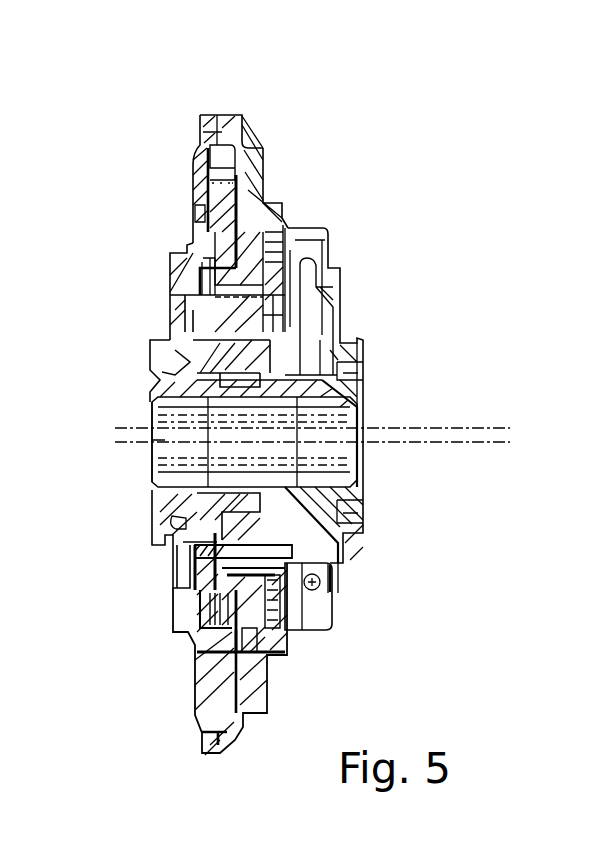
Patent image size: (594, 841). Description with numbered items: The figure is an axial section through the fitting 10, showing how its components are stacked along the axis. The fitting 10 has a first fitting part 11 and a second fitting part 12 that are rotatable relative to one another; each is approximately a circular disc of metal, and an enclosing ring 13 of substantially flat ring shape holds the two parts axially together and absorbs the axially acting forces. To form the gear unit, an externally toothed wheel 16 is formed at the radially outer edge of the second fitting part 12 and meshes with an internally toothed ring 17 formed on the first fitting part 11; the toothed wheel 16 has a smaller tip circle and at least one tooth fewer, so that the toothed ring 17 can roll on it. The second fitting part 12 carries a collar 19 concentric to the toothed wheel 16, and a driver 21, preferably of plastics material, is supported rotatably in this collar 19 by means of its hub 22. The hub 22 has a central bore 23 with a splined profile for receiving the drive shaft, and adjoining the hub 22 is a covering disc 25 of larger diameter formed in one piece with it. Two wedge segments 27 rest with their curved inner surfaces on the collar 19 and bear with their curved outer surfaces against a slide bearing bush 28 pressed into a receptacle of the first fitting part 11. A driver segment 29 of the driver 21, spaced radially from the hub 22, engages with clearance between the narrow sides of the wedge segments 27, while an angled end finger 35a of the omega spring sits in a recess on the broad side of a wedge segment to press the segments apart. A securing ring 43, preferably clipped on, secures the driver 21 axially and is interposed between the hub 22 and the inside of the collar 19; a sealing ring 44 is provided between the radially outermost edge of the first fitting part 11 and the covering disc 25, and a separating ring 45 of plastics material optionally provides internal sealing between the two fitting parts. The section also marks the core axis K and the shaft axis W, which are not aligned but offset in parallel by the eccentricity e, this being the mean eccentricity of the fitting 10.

The fitting 10 is at (380, 155).
The first fitting part 11 is at (290, 216).
The second fitting part 12 is at (203, 223).
The enclosing ring 13 is at (203, 146).
The externally toothed wheel 16 is at (235, 175).
The internally toothed ring 17 is at (228, 157).
The collar 19 is at (337, 380).
The driver 21 is at (367, 488).
The hub 22 is at (255, 399).
The bore 23 is at (160, 465).
The covering disc 25 is at (337, 297).
The wedge segments 27 is at (240, 328).
The slide bearing bush 28 is at (275, 580).
The driver segment 29 is at (253, 557).
The angled end finger 35a is at (273, 325).
The securing ring 43 is at (182, 553).
The sealing ring 44 is at (332, 623).
The separating ring 45 is at (200, 262).
The core axis K is at (460, 427).
The shaft axis W is at (465, 442).
The eccentricity e is at (505, 392).